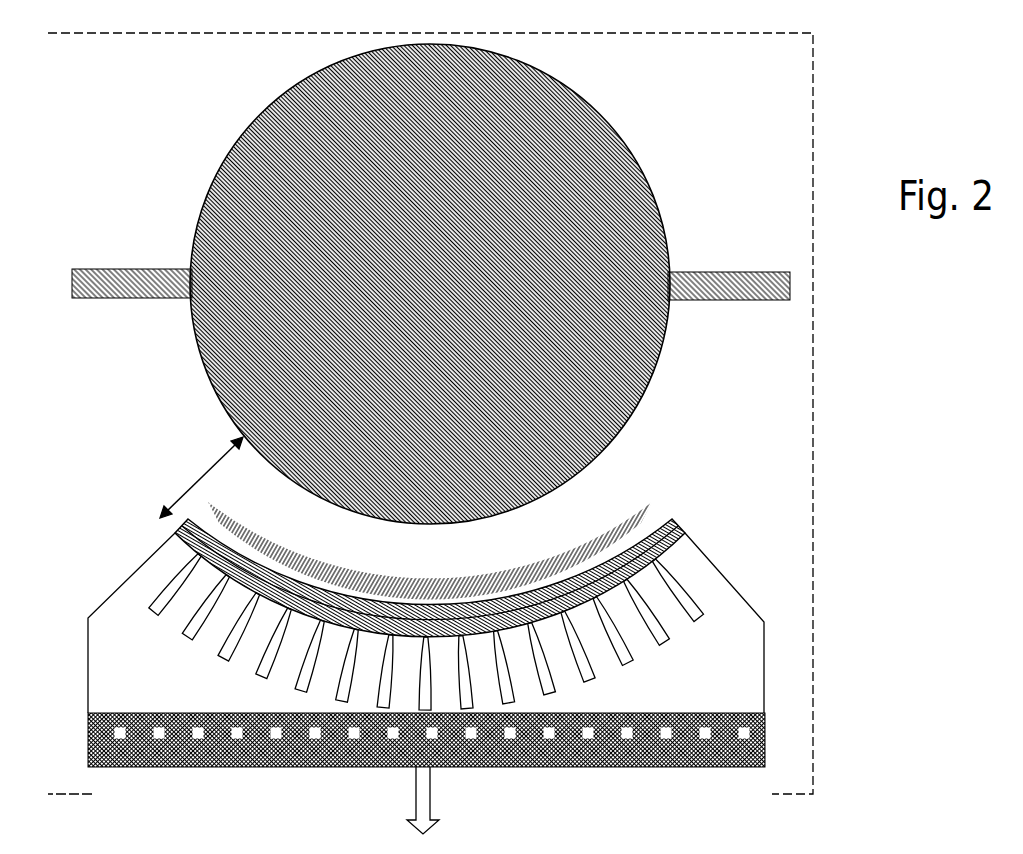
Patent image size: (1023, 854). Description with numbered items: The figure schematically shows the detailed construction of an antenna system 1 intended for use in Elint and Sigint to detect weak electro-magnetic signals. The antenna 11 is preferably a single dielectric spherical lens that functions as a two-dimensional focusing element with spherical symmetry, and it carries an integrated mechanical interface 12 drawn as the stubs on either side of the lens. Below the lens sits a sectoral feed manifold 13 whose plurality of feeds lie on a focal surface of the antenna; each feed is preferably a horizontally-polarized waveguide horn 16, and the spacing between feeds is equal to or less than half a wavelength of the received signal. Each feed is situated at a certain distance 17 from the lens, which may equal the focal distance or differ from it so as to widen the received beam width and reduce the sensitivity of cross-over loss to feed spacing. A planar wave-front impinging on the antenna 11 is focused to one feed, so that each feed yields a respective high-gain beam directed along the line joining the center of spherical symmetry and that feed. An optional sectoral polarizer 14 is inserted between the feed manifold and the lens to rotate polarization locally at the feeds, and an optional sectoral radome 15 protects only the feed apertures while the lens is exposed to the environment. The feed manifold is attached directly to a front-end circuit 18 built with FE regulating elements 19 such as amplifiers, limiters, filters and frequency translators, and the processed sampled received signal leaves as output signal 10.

The antenna system 1 is at (430, 413).
The output signal 10 is at (430, 795).
The antenna 11 is at (660, 215).
The mechanical interface 12 is at (122, 268).
The feed manifold 13 is at (735, 610).
The sectoral polarizer 14 is at (680, 523).
The sectoral radome 15 is at (655, 508).
The horizontally-polarized waveguide horn 16 is at (173, 582).
The distance 17 is at (207, 478).
The front-end circuit 18 is at (702, 758).
The FE regulating elements 19 is at (587, 732).